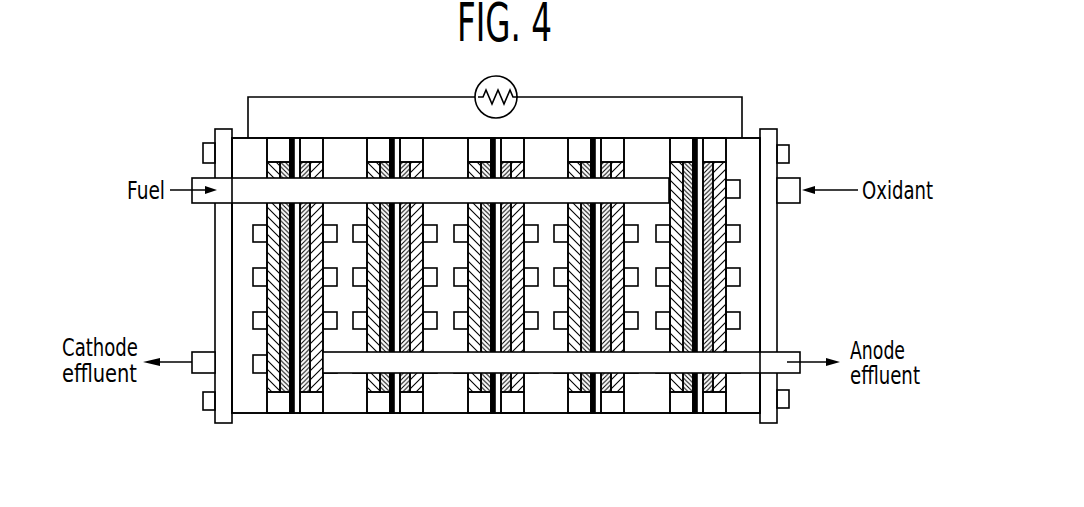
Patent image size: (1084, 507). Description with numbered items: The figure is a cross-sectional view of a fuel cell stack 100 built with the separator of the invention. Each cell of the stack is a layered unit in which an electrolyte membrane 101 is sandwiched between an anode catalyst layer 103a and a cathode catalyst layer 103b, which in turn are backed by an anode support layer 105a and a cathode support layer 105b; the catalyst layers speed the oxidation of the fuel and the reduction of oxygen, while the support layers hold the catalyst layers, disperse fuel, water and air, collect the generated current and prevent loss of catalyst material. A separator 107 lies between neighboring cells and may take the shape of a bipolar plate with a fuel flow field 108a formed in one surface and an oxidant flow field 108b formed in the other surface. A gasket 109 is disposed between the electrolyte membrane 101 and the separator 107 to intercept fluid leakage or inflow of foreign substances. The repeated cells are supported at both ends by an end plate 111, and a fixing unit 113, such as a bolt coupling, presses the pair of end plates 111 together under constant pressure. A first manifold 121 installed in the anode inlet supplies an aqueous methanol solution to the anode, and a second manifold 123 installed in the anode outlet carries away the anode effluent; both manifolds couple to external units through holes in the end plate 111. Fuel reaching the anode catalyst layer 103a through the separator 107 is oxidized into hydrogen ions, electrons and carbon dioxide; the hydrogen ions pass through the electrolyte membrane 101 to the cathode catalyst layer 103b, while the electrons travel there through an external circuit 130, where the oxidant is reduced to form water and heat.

The fuel cell stack 100 is at (234, 72).
The external circuit 130 is at (622, 97).
The first manifold 121 is at (253, 194).
The second manifold 123 is at (742, 355).
The fuel flow field 108a is at (257, 273).
The oxidant flow field 108b is at (738, 274).
The electrolyte membrane 101 is at (293, 398).
The anode catalyst layer 103a is at (283, 395).
The cathode catalyst layer 103b is at (308, 397).
The anode support layer 105a is at (276, 396).
The cathode support layer 105b is at (318, 395).
The separator 107 is at (652, 402).
The gasket 109 is at (682, 410).
The end plate 111 is at (770, 415).
The fixing unit 113 is at (790, 398).